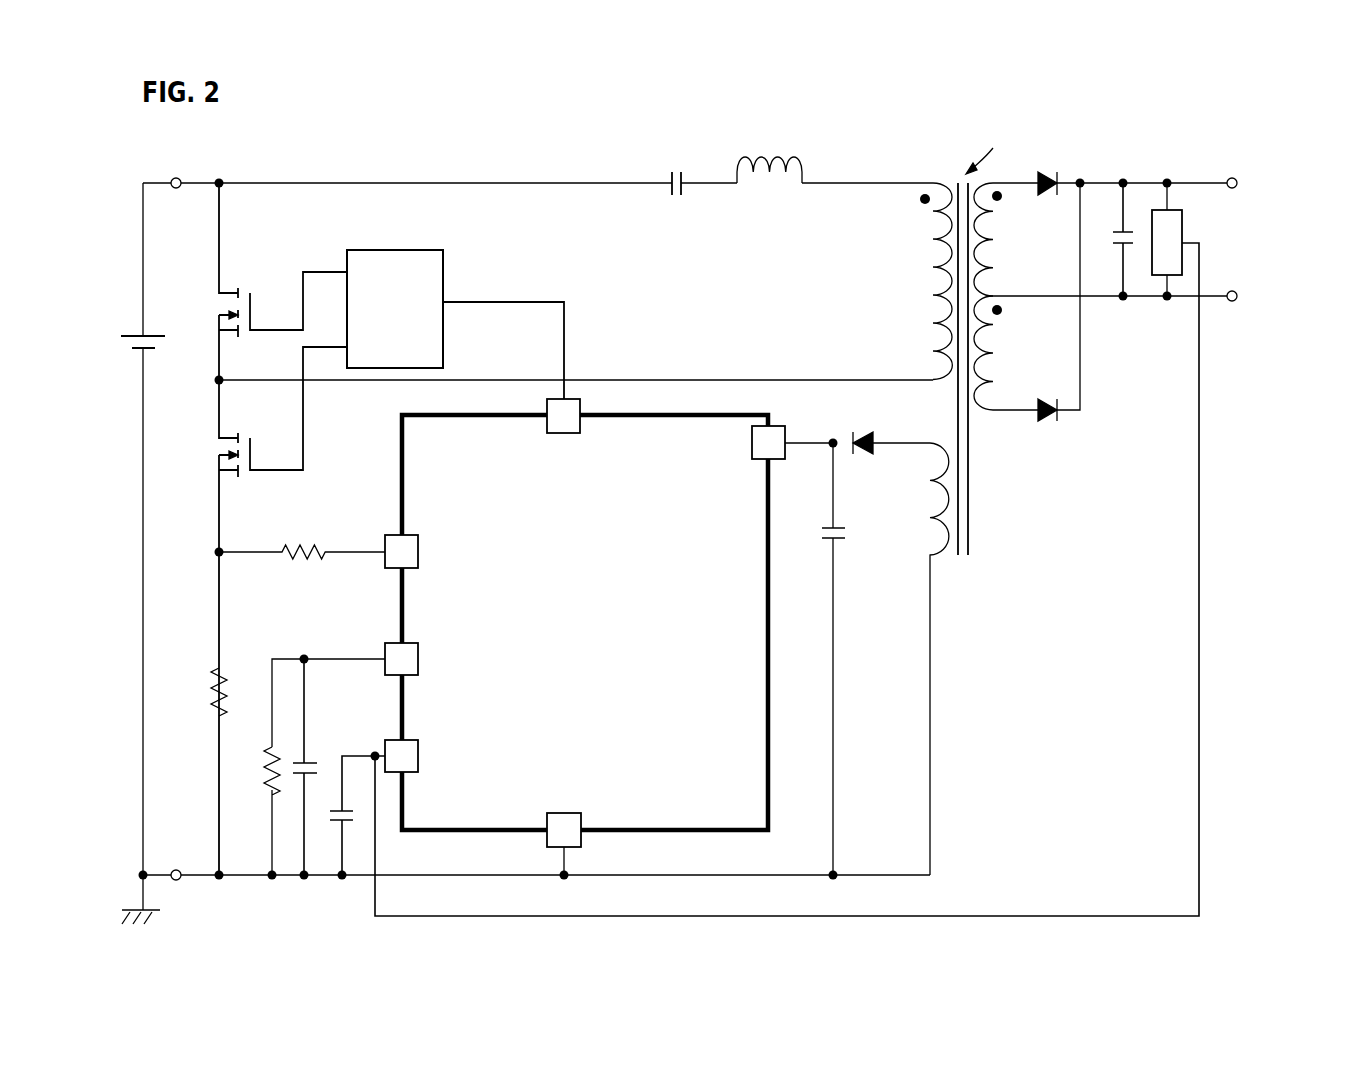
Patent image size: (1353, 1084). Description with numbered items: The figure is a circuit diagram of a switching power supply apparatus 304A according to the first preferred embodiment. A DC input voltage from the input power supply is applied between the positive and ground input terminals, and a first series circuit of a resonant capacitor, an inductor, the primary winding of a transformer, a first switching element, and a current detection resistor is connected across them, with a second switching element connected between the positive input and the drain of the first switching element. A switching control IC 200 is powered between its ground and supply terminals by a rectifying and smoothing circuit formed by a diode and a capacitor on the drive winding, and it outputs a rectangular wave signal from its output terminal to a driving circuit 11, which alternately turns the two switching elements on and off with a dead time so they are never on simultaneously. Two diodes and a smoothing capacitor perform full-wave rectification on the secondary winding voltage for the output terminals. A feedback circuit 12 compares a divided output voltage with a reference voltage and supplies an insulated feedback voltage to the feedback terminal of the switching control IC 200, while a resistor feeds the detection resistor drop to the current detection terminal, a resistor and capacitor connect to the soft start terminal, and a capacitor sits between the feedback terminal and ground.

The driving circuit 11 is at (412, 250).
The switching control IC 200 is at (666, 415).
The feedback circuit 12 is at (1183, 220).
The switching power supply apparatus 304A is at (708, 519).